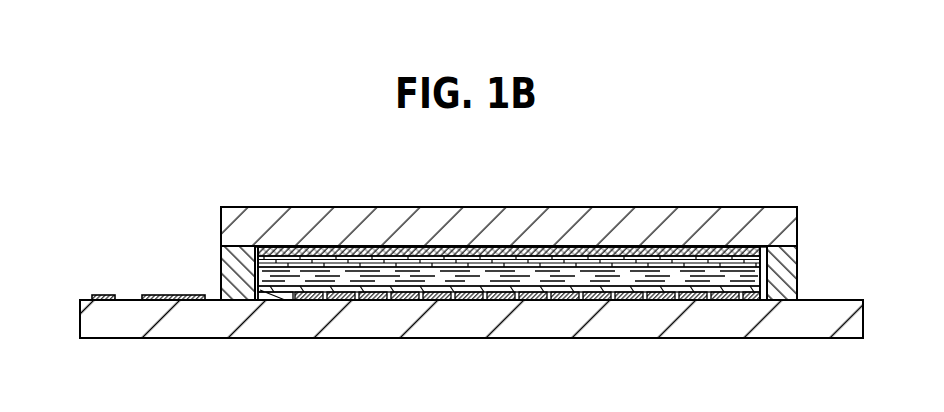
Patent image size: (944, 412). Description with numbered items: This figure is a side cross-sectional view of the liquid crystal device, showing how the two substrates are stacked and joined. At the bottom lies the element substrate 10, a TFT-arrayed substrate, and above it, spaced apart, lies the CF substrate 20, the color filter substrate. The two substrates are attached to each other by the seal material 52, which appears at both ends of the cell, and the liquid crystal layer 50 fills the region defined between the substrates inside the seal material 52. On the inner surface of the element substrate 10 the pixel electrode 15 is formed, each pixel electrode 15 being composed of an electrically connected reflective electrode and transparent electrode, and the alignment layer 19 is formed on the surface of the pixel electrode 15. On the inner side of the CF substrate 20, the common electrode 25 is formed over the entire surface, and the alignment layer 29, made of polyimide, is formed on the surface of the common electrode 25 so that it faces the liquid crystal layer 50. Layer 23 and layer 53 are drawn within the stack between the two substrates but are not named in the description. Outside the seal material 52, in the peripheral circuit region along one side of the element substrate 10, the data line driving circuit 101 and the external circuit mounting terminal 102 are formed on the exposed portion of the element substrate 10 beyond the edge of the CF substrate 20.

The element substrate 10 is at (540, 323).
The pixel electrode 15 is at (458, 300).
The alignment layer 19 is at (755, 293).
The CF substrate 20 is at (483, 213).
The color filter layer 23 is at (387, 250).
The common electrode 25 is at (528, 247).
The alignment layer 29 is at (687, 250).
The liquid crystal layer 50 is at (287, 291).
The seal material 52 is at (222, 266).
The counter electrode 53 is at (288, 247).
The data line driving circuit 101 is at (165, 295).
The external circuit mounting terminal 102 is at (106, 295).